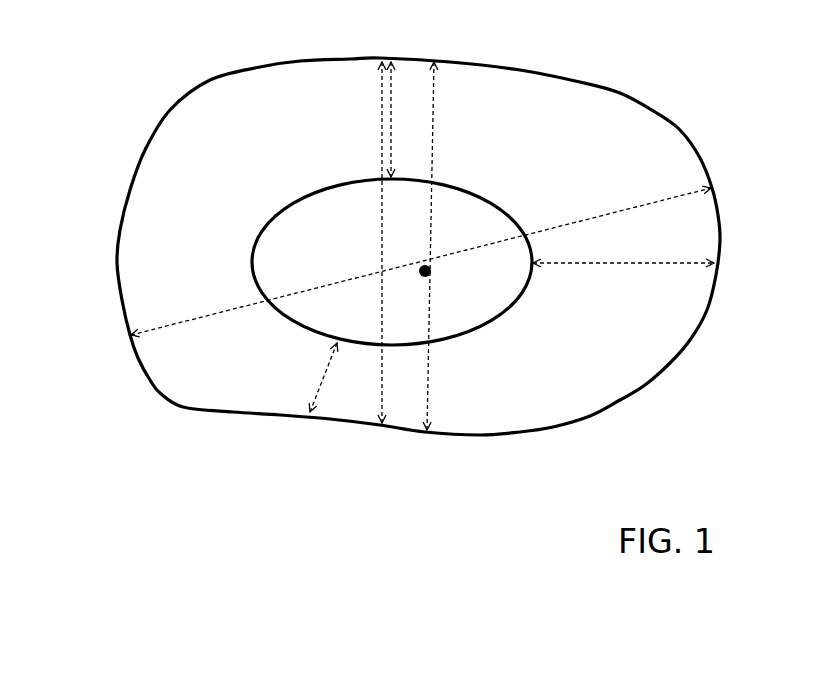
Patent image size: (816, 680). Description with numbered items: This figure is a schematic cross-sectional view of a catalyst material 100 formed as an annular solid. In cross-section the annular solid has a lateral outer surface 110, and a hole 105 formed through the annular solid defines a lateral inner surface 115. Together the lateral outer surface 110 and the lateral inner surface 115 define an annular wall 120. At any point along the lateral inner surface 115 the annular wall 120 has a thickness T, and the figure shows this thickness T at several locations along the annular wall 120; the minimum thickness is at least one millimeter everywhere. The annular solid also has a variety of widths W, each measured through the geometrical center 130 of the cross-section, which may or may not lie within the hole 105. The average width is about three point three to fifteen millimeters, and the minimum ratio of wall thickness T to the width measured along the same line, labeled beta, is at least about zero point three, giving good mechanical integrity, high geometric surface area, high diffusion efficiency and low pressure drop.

The catalyst material 100 is at (382, 224).
The hole 105 is at (392, 262).
The lateral outer surface 110 is at (130, 188).
The lateral inner surface 115 is at (511, 301).
The annular wall 120 is at (260, 178).
The geometrical center 130 is at (428, 258).